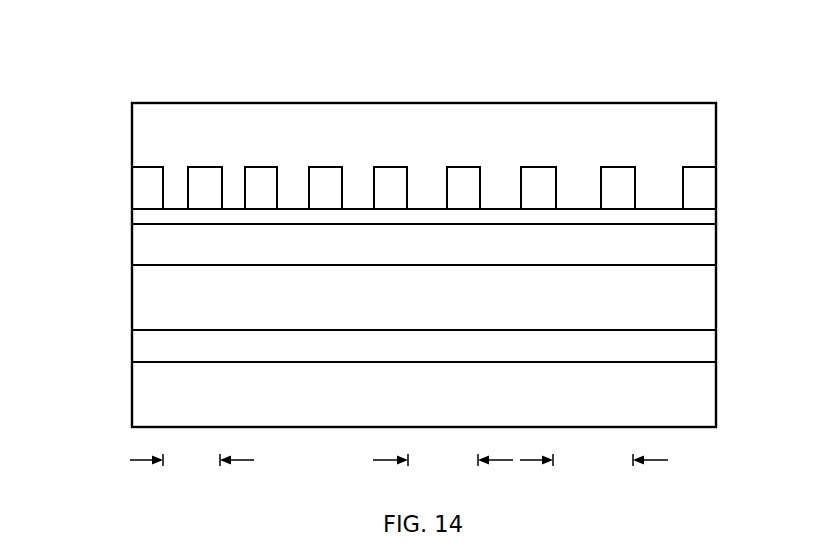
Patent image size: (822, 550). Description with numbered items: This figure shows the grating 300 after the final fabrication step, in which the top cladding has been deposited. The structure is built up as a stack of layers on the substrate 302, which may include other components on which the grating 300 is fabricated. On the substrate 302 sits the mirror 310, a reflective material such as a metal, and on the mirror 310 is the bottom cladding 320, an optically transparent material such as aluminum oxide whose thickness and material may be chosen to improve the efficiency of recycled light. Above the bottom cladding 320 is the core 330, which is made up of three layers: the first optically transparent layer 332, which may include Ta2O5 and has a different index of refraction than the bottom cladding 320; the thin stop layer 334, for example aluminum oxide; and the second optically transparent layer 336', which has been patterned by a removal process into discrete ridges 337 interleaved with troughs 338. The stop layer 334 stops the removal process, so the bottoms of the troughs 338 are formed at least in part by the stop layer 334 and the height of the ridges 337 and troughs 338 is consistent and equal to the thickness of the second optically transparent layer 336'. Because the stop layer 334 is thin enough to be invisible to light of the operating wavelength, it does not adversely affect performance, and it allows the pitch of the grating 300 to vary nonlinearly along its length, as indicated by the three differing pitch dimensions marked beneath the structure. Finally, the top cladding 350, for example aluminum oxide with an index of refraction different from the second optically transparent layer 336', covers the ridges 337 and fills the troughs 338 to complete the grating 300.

The grating 300 is at (404, 50).
The substrate 302 is at (716, 392).
The mirror 310 is at (130, 345).
The bottom cladding 320 is at (716, 310).
The core 330 is at (68, 265).
The first optically transparent layer 332 is at (716, 253).
The stop layer 334 is at (130, 217).
The second optically transparent layer 336' is at (408, 134).
The ridges 337 is at (148, 167).
The troughs 338 is at (181, 155).
The top cladding 350 is at (616, 103).